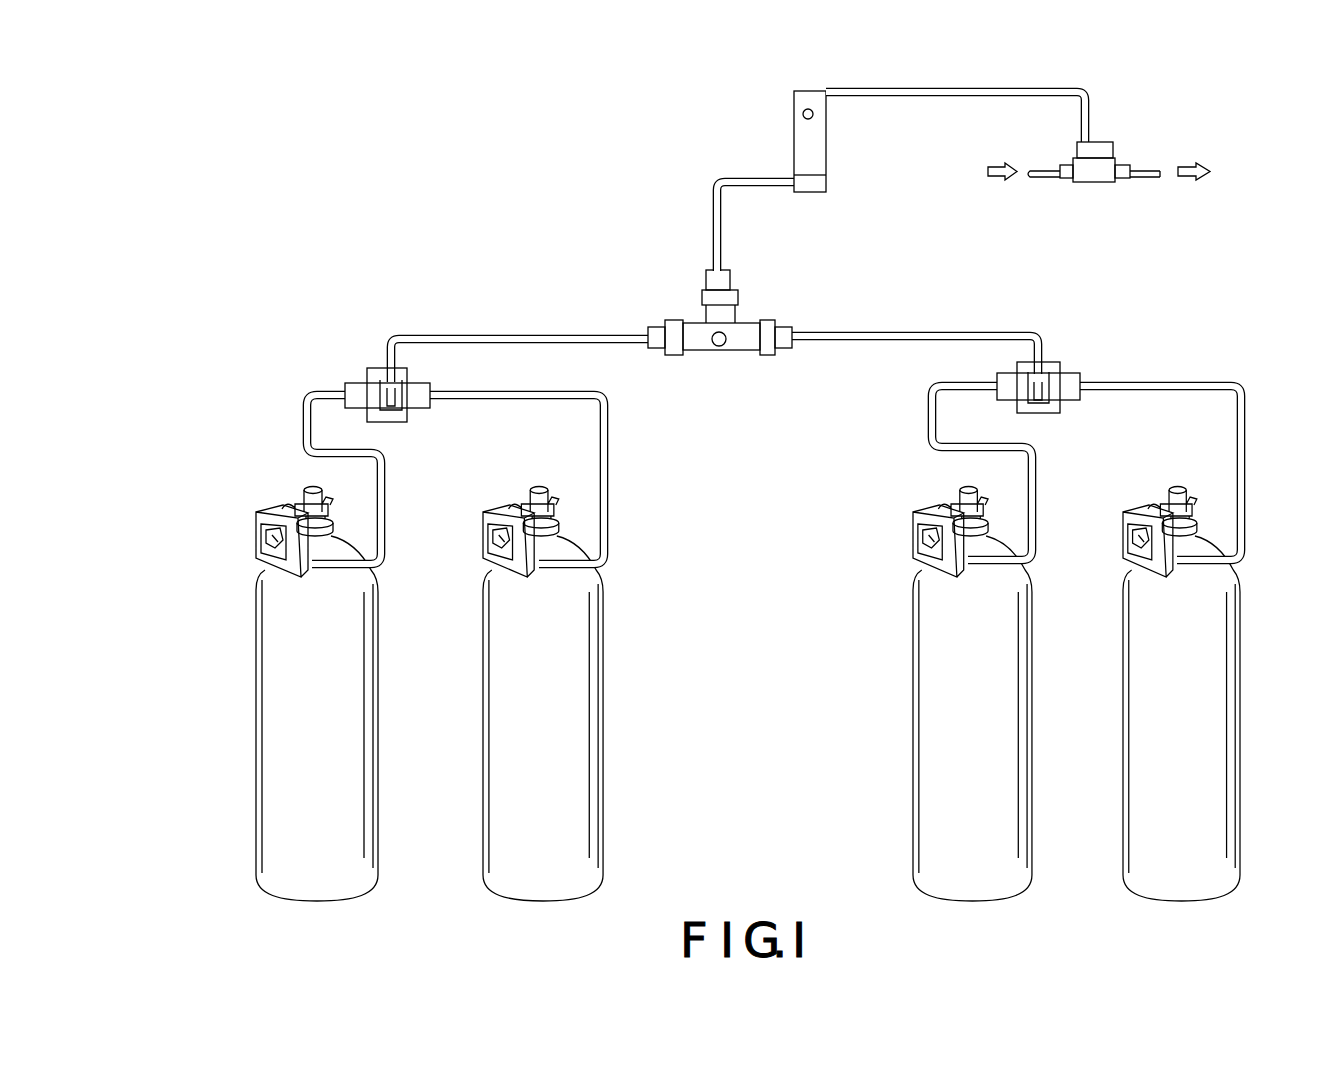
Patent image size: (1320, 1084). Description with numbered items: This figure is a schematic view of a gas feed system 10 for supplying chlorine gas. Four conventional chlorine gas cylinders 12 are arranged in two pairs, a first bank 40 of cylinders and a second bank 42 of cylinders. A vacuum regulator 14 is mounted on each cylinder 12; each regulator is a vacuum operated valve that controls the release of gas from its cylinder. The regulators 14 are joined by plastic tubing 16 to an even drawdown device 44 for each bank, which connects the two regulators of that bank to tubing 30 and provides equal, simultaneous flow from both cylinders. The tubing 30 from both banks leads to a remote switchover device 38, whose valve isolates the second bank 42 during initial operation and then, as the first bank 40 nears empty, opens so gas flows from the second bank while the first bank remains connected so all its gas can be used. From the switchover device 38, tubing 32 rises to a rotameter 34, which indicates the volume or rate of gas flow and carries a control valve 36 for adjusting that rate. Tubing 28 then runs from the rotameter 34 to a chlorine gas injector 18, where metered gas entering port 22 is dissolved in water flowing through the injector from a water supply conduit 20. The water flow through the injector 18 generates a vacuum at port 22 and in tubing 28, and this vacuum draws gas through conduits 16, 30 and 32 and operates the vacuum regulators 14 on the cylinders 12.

The gas feed system 10 is at (624, 286).
The gas cylinder 12 is at (272, 668).
The vacuum regulator 14 is at (258, 511).
The tubing 16 is at (305, 433).
The chlorine gas injector 18 is at (1104, 178).
The water supply conduit 20 is at (1046, 180).
The port 22 is at (1090, 143).
The tubing 28 is at (976, 97).
The tubing 30 is at (494, 335).
The tubing 32 is at (719, 228).
The rotameter 34 is at (800, 143).
The control valve 36 is at (803, 114).
The remote switchover device 38 is at (701, 342).
The first bank of cylinders 40 is at (436, 462).
The second bank of cylinders 42 is at (1095, 455).
The even drawdown device 44 is at (368, 378).